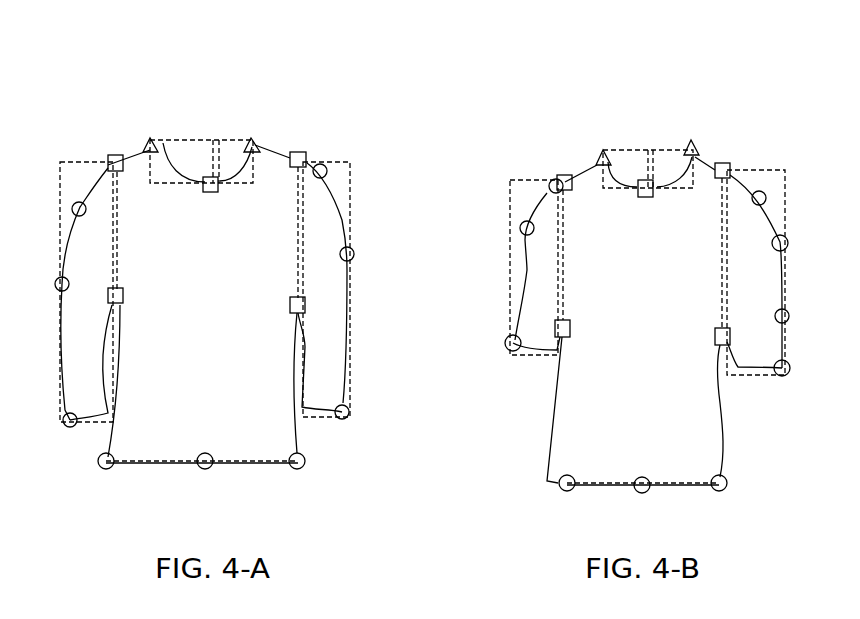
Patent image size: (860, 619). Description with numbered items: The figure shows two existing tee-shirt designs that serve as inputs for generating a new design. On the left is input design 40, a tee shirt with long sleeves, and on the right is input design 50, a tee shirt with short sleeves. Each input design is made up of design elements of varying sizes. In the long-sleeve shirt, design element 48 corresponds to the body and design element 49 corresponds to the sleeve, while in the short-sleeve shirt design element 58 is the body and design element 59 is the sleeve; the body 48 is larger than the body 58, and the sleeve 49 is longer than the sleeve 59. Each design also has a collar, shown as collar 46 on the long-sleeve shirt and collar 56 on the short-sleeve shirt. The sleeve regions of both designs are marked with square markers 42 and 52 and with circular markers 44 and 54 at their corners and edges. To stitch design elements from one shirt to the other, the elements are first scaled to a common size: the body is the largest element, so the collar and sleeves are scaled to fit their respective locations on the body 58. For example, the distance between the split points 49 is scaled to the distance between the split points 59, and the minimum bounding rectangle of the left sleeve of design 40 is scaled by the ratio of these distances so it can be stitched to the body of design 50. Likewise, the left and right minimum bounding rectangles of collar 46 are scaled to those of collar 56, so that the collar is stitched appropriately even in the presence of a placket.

In FIG. 4-A, the input design 40 is at (203, 47).
In FIG. 4-A, the square fastener markers 42 is at (123, 297).
In FIG. 4-A, the circular fastener markers 44 is at (72, 209).
In FIG. 4-A, the collar 46 is at (148, 139).
In FIG. 4-A, the design element 48 is at (202, 304).
In FIG. 4-A, the design element 49 is at (205, 292).
In FIG. 4-B, the input design 50 is at (656, 47).
In FIG. 4-B, the square fastener markers 52 is at (645, 200).
In FIG. 4-B, the circular fastener markers 54 is at (521, 227).
In FIG. 4-B, the collar 56 is at (602, 150).
In FIG. 4-B, the design element 58 is at (635, 321).
In FIG. 4-B, the design element 59 is at (647, 272).